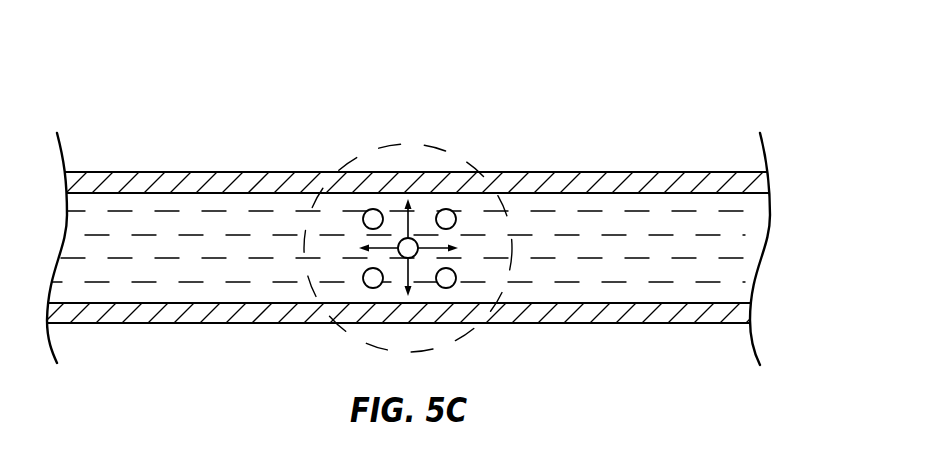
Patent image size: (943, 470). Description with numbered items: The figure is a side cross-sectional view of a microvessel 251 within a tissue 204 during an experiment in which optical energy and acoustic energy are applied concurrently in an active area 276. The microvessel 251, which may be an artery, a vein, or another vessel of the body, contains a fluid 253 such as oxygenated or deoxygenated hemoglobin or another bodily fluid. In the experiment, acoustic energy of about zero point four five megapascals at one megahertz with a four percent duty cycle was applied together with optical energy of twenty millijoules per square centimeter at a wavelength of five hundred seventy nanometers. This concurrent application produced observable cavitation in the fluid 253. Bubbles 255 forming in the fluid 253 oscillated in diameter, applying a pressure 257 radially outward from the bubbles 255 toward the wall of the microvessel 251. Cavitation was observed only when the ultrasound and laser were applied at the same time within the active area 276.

The tissue 204 is at (419, 222).
The microvessel 251 is at (602, 173).
The fluid 253 is at (587, 289).
The bubbles 255 is at (415, 252).
The pressure 257 is at (408, 275).
The active area 276 is at (463, 160).